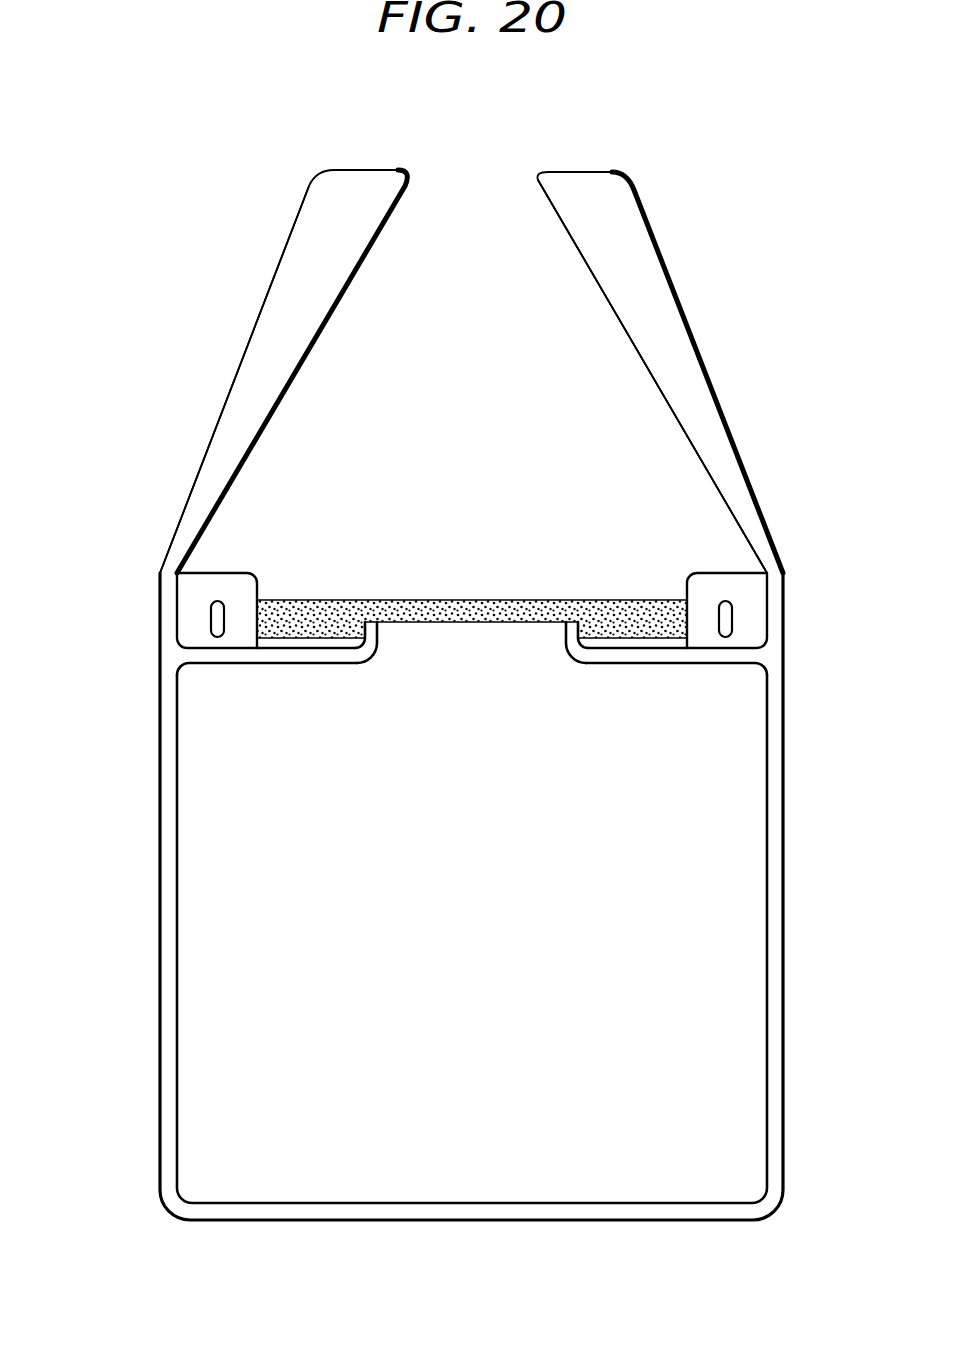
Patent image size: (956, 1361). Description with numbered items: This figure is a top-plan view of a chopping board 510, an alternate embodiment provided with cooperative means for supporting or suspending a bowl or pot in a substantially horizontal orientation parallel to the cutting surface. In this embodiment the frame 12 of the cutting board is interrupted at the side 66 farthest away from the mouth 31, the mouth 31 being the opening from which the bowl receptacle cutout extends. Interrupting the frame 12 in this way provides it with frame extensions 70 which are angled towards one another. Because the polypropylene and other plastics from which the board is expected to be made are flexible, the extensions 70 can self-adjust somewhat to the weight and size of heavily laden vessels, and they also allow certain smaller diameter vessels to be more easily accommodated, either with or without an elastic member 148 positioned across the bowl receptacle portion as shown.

The chopping board 510 is at (140, 760).
The frame 12 is at (165, 657).
The mouth 31 is at (453, 645).
The elastic member 148 is at (621, 612).
The frame extensions 70 is at (260, 366).
The side 66 is at (471, 165).